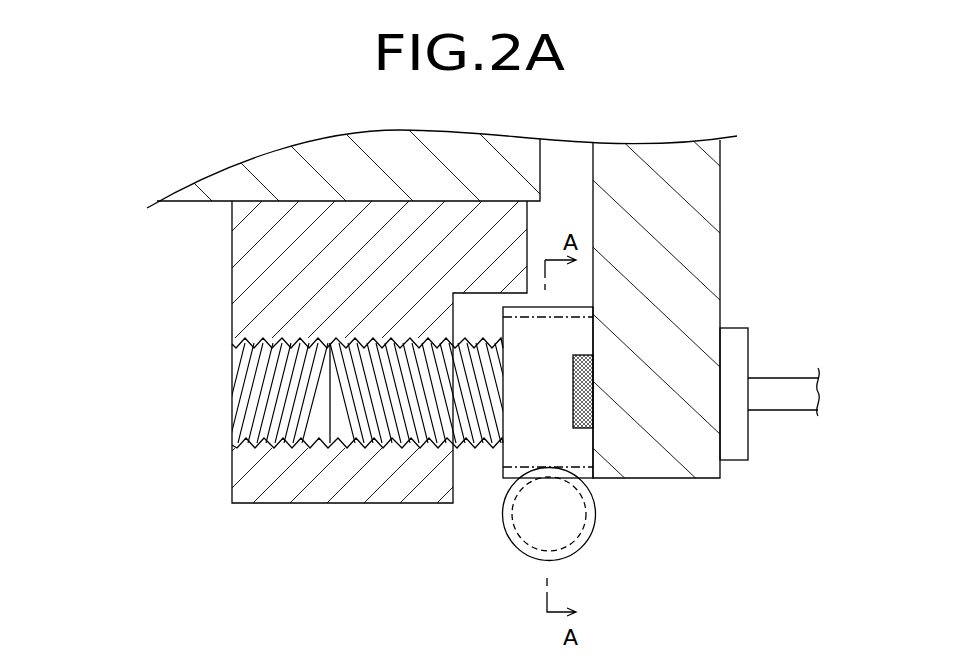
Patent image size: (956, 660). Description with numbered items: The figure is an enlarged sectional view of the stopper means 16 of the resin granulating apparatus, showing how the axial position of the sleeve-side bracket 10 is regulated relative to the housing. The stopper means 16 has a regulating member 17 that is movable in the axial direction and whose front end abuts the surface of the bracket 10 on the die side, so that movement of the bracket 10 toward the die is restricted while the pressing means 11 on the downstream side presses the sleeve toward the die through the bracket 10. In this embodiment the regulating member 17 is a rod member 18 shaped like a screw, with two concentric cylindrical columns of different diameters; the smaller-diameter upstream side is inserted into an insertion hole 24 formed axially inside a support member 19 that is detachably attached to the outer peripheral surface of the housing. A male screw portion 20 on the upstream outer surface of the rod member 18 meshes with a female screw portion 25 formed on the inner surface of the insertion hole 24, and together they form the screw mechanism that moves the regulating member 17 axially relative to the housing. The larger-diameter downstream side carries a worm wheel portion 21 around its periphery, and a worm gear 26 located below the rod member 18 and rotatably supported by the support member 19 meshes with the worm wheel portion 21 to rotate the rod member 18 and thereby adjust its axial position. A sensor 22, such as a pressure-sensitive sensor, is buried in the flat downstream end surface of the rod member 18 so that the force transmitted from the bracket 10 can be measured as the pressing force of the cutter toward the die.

The bracket 10 is at (703, 213).
The pressing means 11 is at (785, 402).
The stopper means 16 is at (375, 383).
The regulating member 17 is at (327, 387).
The rod member 18 is at (323, 395).
The support member 19 is at (303, 487).
The male screw portion 20 is at (385, 447).
The worm wheel portion 21 is at (566, 307).
The sensor 22 is at (595, 370).
The insertion hole 24 is at (268, 432).
The female screw portion 25 is at (263, 355).
The worm gear 26 is at (596, 514).